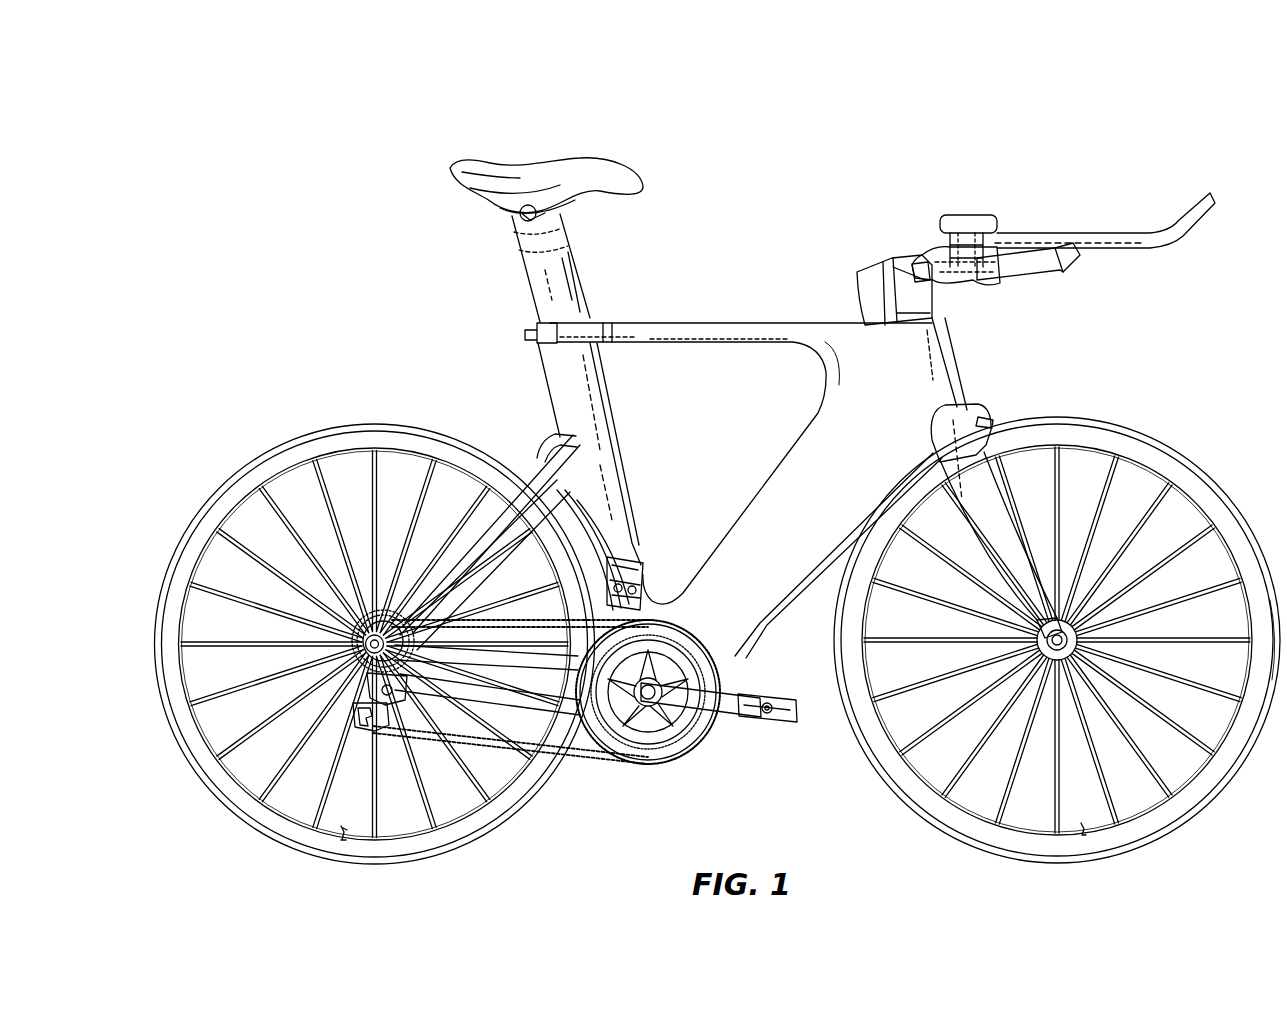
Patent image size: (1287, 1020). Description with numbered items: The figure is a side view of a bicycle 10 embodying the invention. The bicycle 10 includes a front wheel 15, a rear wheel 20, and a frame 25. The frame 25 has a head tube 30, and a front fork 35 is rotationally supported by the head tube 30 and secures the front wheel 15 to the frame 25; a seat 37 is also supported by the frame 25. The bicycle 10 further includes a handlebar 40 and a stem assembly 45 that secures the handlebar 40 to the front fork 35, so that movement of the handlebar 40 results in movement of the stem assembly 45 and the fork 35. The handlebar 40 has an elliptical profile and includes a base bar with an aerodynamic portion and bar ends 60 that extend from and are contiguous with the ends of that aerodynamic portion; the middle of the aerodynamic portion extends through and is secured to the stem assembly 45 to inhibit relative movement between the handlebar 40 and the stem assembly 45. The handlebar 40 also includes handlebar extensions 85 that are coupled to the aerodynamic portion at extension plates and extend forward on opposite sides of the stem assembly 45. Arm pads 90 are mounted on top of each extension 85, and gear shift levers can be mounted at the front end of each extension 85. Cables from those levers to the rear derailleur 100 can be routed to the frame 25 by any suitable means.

The bicycle 10 is at (919, 83).
The front wheel 15 is at (1192, 472).
The rear wheel 20 is at (250, 470).
The frame 25 is at (744, 325).
The head tube 30 is at (958, 358).
The front fork 35 is at (1007, 427).
The seat 37 is at (583, 170).
The handlebar 40 is at (978, 283).
The stem assembly 45 is at (928, 262).
The bar ends 60 is at (1060, 264).
The handlebar extensions 85 is at (1105, 237).
The arm pads 90 is at (982, 222).
The rear derailleur 100 is at (419, 790).